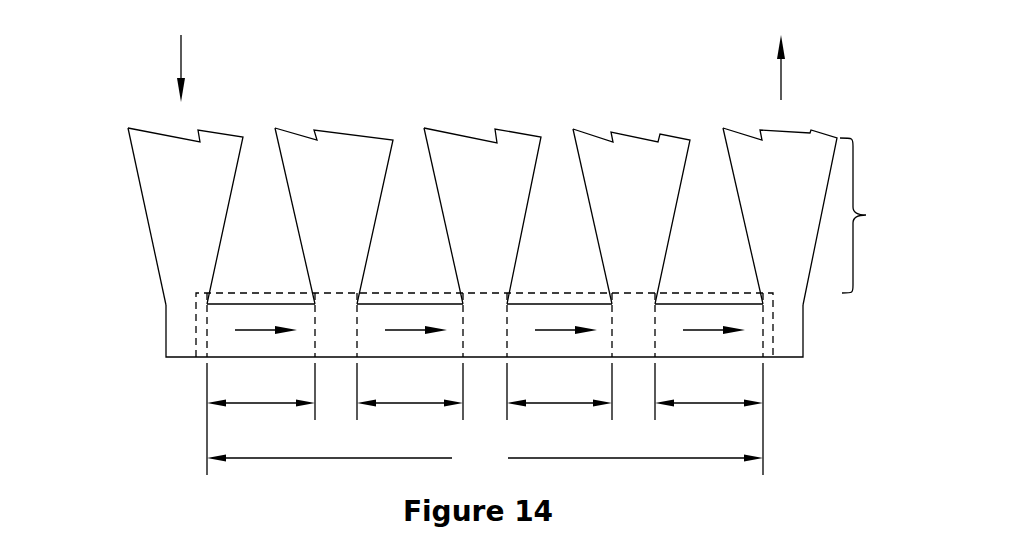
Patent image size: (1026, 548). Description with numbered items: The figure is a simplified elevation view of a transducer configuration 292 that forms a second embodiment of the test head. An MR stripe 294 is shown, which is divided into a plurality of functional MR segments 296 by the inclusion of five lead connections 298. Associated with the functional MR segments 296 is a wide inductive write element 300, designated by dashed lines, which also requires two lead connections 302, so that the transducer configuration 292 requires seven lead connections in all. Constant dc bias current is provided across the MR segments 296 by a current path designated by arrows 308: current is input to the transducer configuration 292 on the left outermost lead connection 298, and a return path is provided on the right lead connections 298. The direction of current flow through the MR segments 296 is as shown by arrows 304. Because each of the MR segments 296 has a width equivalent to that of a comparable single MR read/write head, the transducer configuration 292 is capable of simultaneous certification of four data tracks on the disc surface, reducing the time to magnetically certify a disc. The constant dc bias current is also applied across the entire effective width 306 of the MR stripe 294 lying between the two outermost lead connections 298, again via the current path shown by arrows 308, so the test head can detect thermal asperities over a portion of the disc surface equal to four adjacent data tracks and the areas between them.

The transducer configuration 292 is at (118, 65).
The MR stripe 294 is at (842, 293).
The functional MR segments 296 is at (773, 370).
The lead connections 298 is at (878, 215).
The wide inductive write element 300 is at (197, 322).
The lead connections 302 is at (246, 292).
The arrows 304 is at (258, 330).
The effective width 306 is at (485, 458).
The arrows 308 is at (182, 53).